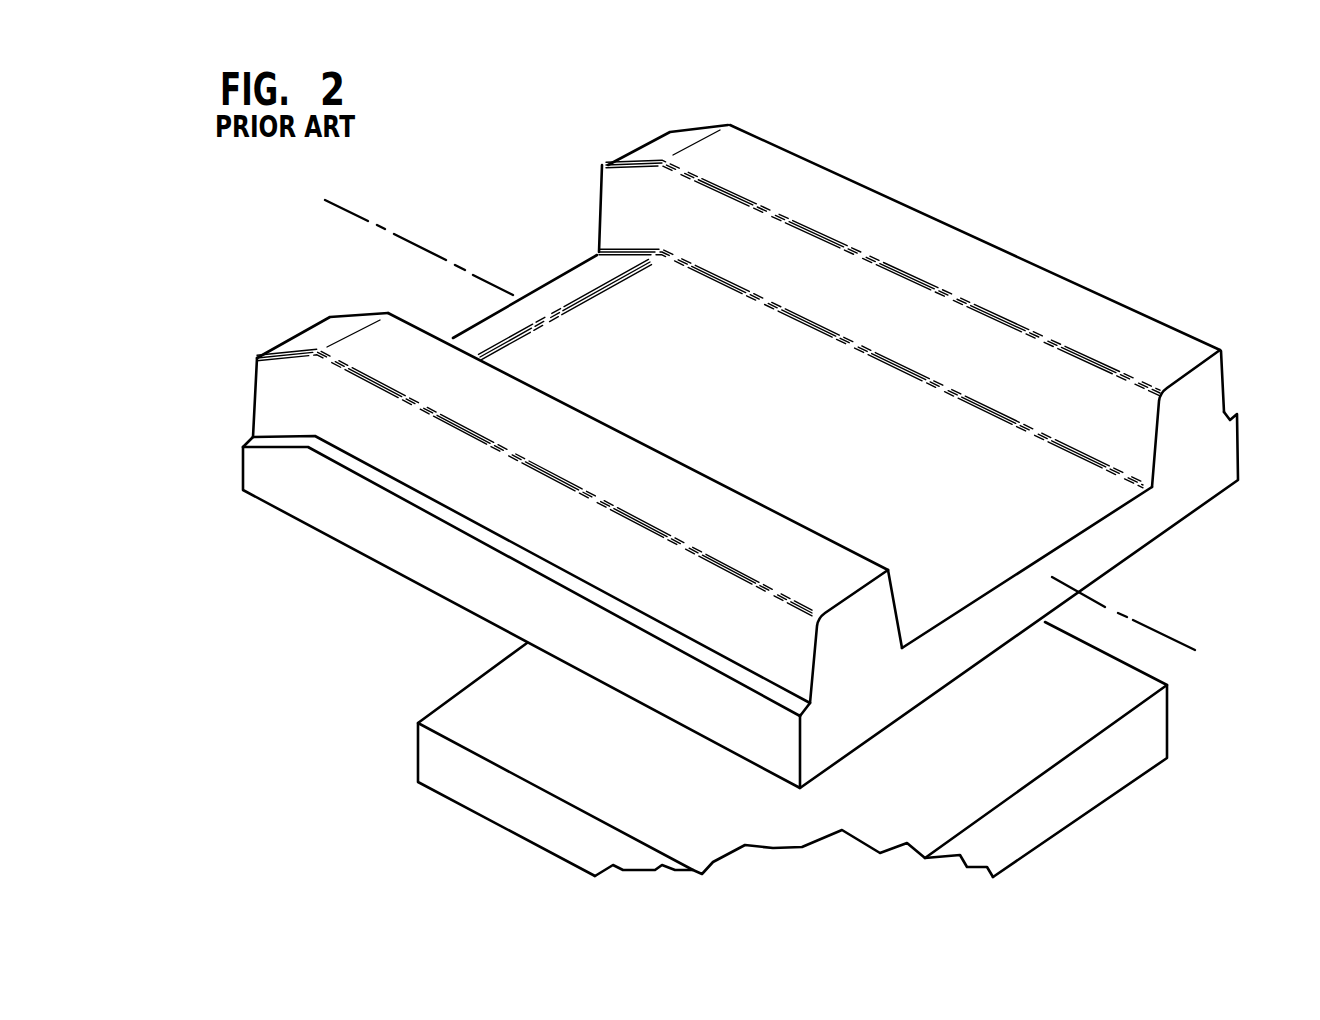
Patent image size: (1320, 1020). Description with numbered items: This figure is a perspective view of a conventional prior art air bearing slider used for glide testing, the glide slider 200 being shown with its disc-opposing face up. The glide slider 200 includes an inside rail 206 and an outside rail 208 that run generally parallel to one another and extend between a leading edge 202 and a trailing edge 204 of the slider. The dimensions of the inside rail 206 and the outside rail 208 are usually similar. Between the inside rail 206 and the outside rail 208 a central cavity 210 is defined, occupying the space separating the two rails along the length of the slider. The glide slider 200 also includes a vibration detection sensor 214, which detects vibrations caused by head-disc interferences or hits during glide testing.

The conventional glide slider 200 is at (749, 432).
The leading edge 202 is at (587, 293).
The trailing edge 204 is at (1107, 517).
The inside rail 206 is at (1015, 285).
The outside rail 208 is at (452, 383).
The central cavity 210 is at (788, 357).
The vibration detection sensor 214 is at (1093, 707).